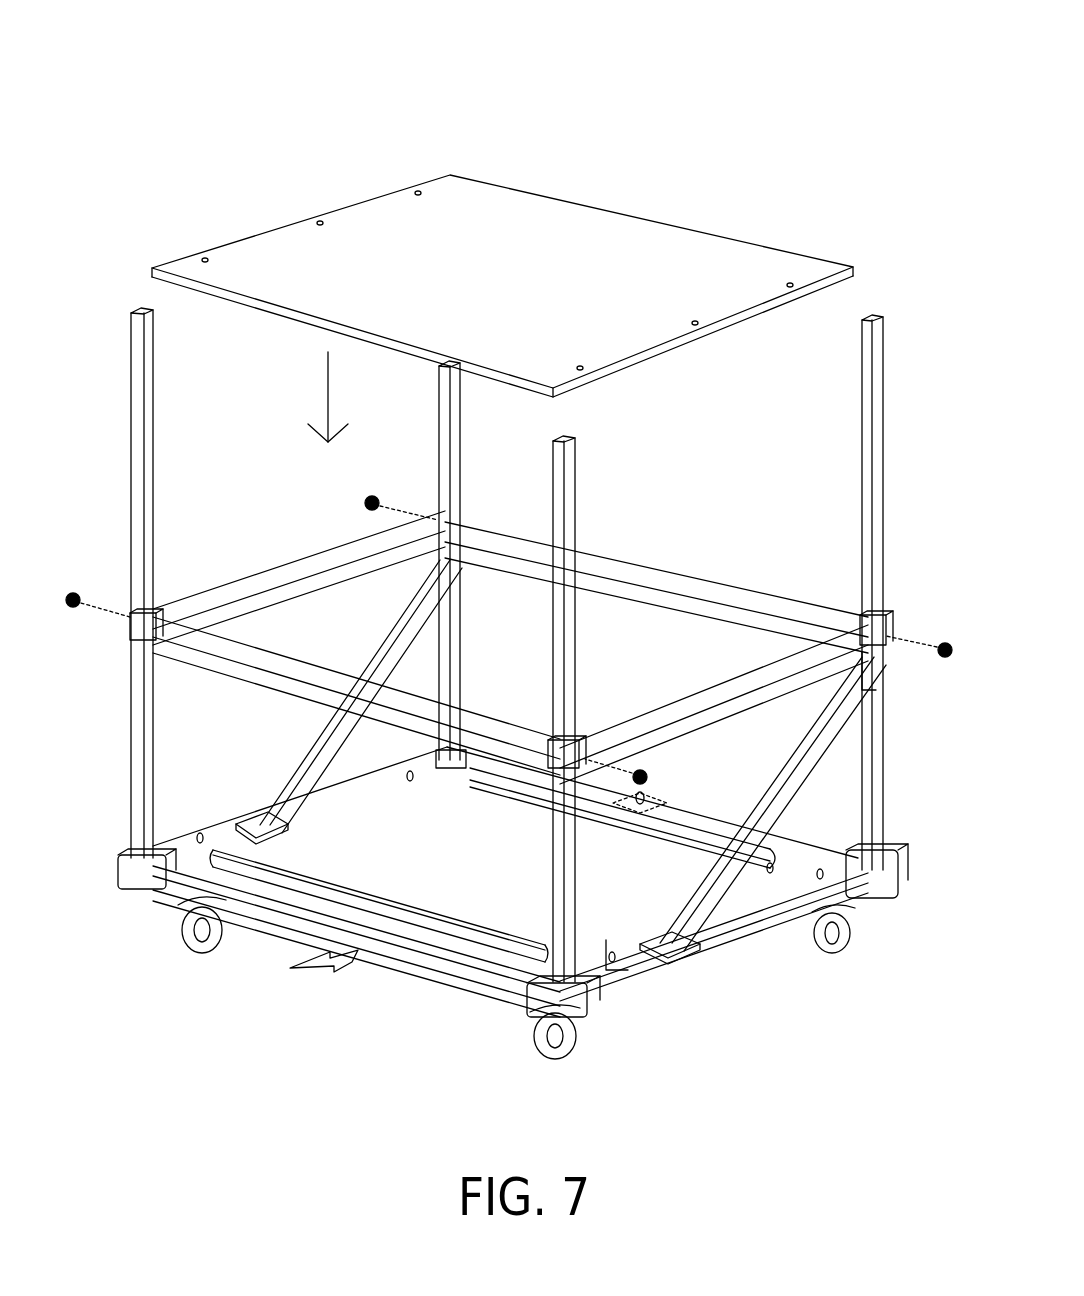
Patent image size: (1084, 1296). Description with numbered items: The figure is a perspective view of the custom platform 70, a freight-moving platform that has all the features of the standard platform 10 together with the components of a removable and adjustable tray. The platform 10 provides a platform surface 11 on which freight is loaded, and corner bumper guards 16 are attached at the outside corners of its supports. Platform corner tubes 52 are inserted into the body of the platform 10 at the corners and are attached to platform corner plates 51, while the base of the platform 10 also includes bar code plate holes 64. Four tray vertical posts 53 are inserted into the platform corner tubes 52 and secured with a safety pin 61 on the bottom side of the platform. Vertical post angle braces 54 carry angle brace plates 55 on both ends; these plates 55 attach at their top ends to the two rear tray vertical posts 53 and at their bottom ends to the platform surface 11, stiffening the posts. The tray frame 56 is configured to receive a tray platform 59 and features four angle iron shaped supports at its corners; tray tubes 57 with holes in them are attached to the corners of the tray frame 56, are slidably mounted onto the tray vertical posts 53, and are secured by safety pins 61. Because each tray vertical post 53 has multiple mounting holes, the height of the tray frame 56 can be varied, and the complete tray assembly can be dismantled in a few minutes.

The platform 10 is at (398, 947).
The platform surface 11 is at (290, 898).
The corner bumper guards 16 is at (122, 878).
The platform corner plates 51 is at (168, 918).
The platform corner tubes 52 is at (125, 852).
The tray vertical post 53 is at (130, 330).
The vertical post angle braces 54 is at (420, 622).
The angle brace plates 55 is at (876, 676).
The tray frame 56 is at (665, 588).
The tray tubes 57 is at (132, 606).
The tray platform 59 is at (595, 276).
The safety pin 61 is at (380, 492).
The bar code plate holes 64 is at (276, 814).
The custom platform 70 is at (318, 95).